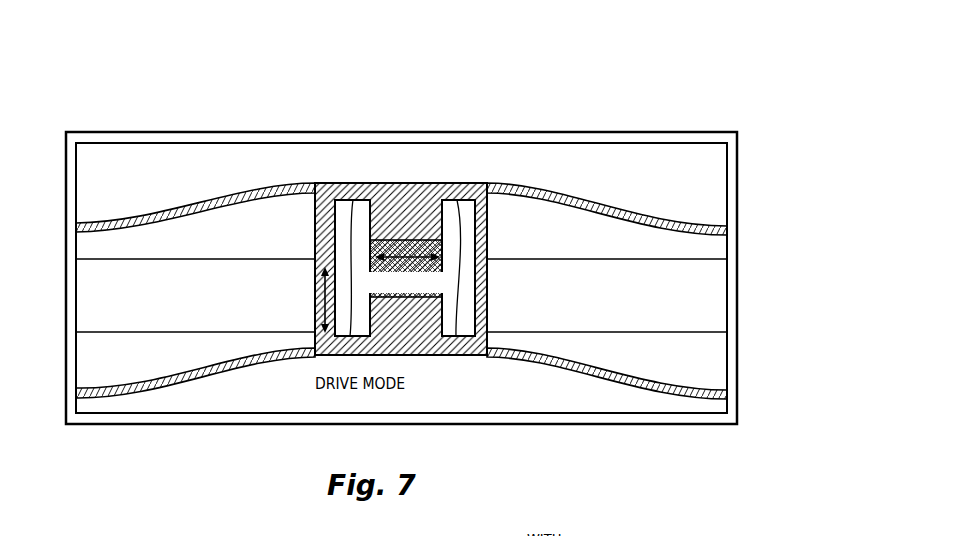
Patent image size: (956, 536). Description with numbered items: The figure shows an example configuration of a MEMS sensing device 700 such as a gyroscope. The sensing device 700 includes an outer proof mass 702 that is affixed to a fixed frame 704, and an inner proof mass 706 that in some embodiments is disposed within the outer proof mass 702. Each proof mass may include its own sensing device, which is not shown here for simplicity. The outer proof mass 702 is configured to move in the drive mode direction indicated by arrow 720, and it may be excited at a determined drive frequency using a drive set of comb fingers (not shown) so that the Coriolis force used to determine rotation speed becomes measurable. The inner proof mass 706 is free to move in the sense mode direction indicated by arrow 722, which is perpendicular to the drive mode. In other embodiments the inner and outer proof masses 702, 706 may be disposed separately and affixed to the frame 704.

The MEMS sensing device 700 is at (622, 44).
The outer proof mass 702 is at (295, 183).
The fixed frame 704 is at (737, 233).
The inner proof mass 706 is at (388, 240).
The arrow 720 is at (317, 287).
The arrow 722 is at (413, 240).